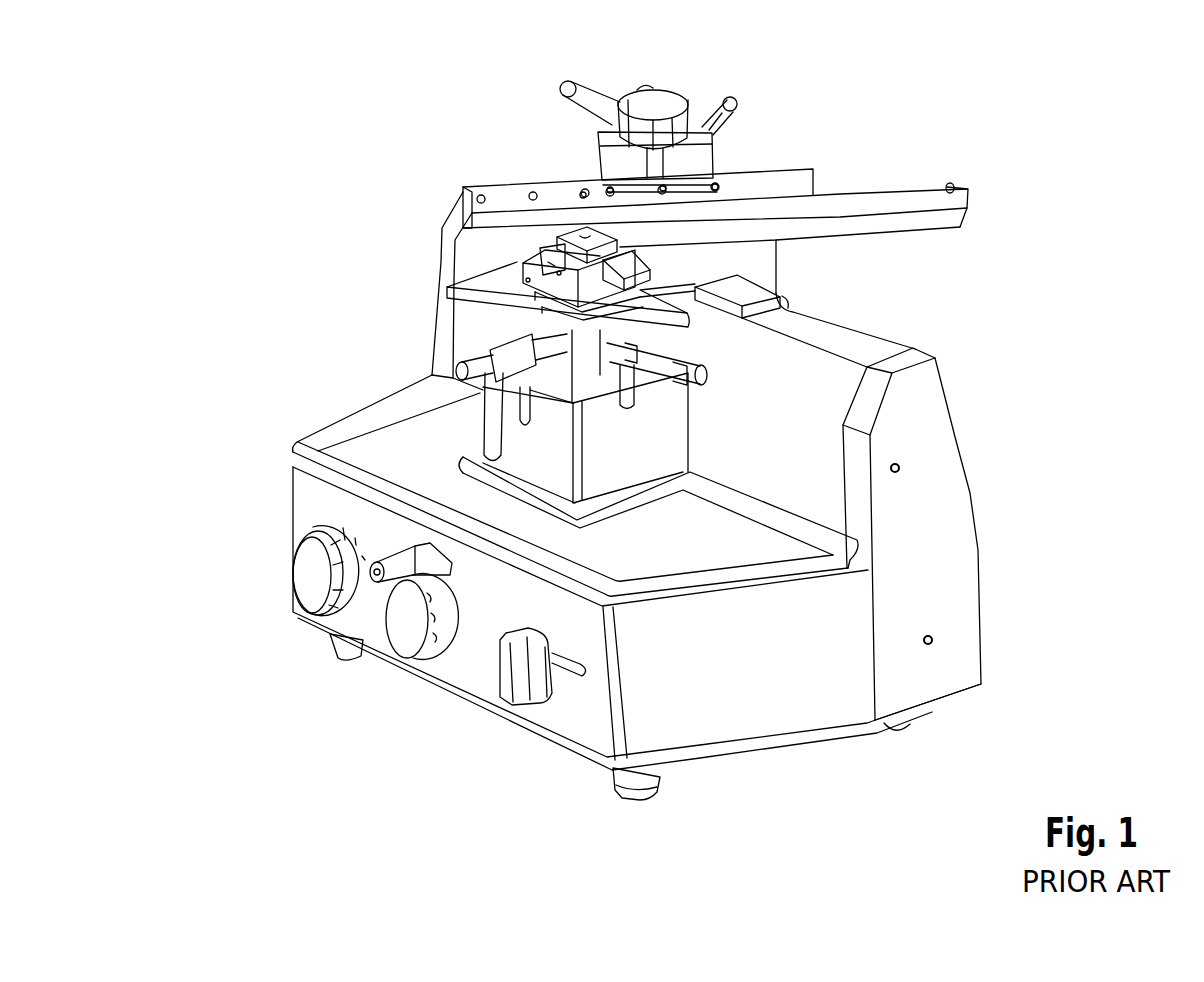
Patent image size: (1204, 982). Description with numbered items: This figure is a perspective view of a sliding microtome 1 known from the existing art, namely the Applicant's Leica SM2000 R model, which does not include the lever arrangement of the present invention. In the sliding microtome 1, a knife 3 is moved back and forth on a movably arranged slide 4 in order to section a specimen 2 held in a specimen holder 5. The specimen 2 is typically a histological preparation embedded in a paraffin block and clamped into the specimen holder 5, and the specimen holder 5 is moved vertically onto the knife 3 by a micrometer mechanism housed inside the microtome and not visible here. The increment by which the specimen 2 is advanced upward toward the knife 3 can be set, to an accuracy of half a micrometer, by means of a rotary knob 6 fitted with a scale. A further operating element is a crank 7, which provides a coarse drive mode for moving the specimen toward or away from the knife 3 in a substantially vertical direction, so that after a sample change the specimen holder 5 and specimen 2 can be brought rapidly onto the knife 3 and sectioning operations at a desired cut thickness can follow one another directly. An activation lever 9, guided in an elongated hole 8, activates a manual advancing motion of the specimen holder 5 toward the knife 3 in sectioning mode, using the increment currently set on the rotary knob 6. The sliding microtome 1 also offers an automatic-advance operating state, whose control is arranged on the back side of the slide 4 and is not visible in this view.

The sliding microtome 1 is at (316, 338).
The specimen 2 is at (583, 237).
The knife 3 is at (498, 207).
The slide 4 is at (830, 304).
The specimen holder 5 is at (548, 284).
The rotary knob 6 is at (313, 568).
The crank 7 is at (405, 622).
The elongated hole 8 is at (577, 673).
The activation lever 9 is at (510, 678).